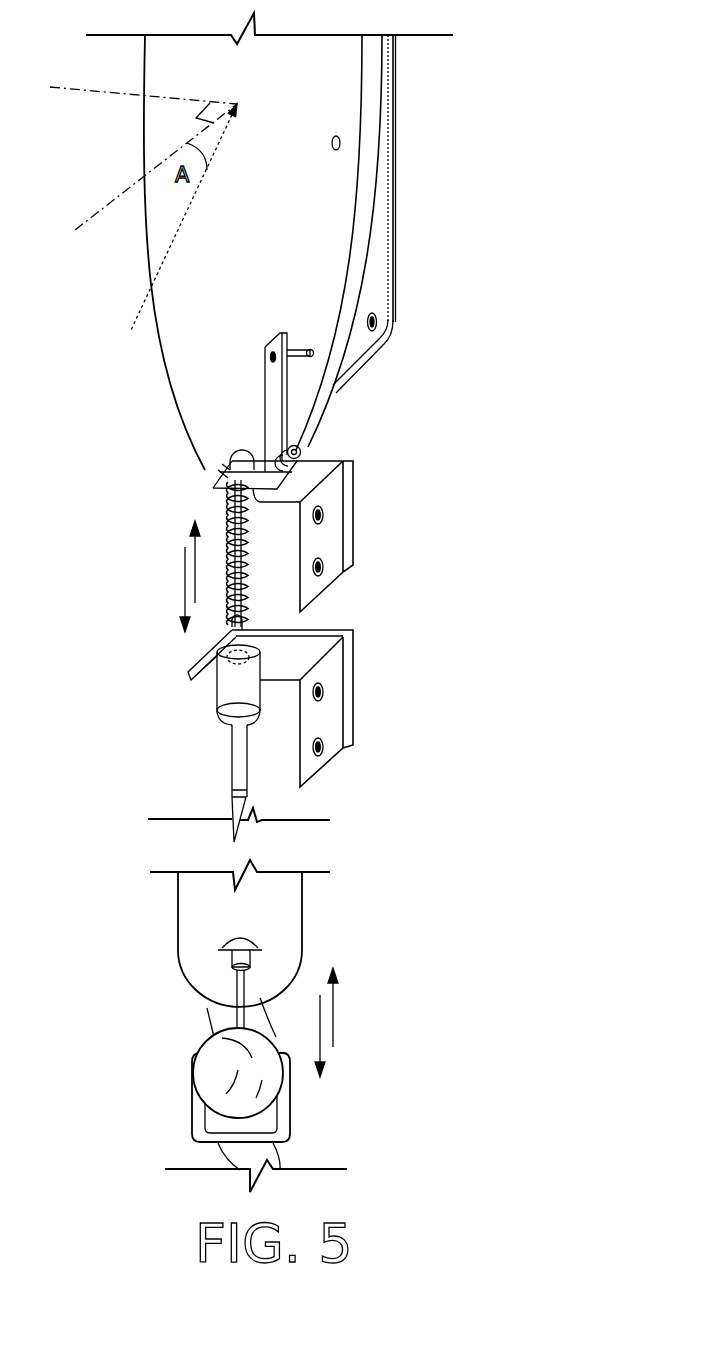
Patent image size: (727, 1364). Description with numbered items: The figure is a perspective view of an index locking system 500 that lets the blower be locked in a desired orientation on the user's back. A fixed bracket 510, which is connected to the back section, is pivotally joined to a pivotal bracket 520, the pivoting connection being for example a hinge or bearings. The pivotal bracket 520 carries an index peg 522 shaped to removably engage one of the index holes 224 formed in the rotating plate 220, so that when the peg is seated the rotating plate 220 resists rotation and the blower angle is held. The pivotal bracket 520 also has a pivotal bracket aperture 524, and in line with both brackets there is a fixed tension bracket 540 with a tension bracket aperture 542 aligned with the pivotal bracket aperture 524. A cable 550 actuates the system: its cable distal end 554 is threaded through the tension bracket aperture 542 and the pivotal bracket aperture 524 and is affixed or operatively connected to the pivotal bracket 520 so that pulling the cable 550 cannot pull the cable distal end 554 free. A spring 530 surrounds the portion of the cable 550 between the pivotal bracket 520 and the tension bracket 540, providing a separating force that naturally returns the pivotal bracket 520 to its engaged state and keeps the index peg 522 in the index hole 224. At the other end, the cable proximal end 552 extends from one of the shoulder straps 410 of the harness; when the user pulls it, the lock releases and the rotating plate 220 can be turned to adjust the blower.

The needle actuation assembly 500 is at (597, 62).
The rotating plate 220 is at (363, 149).
The index holes 224 is at (326, 148).
The index peg 522 is at (303, 347).
The pivotal bracket aperture 524 is at (238, 460).
The fixed bracket 510 is at (356, 507).
The pivotal bracket 520 is at (213, 485).
The spring 530 is at (250, 557).
The fixed tension bracket 540 is at (352, 692).
The tension bracket aperture 542 is at (230, 663).
The cable 550 is at (228, 803).
The cable distal end 554 is at (250, 775).
The shoulder straps 410 is at (302, 930).
The cable proximal end 552 is at (213, 1012).